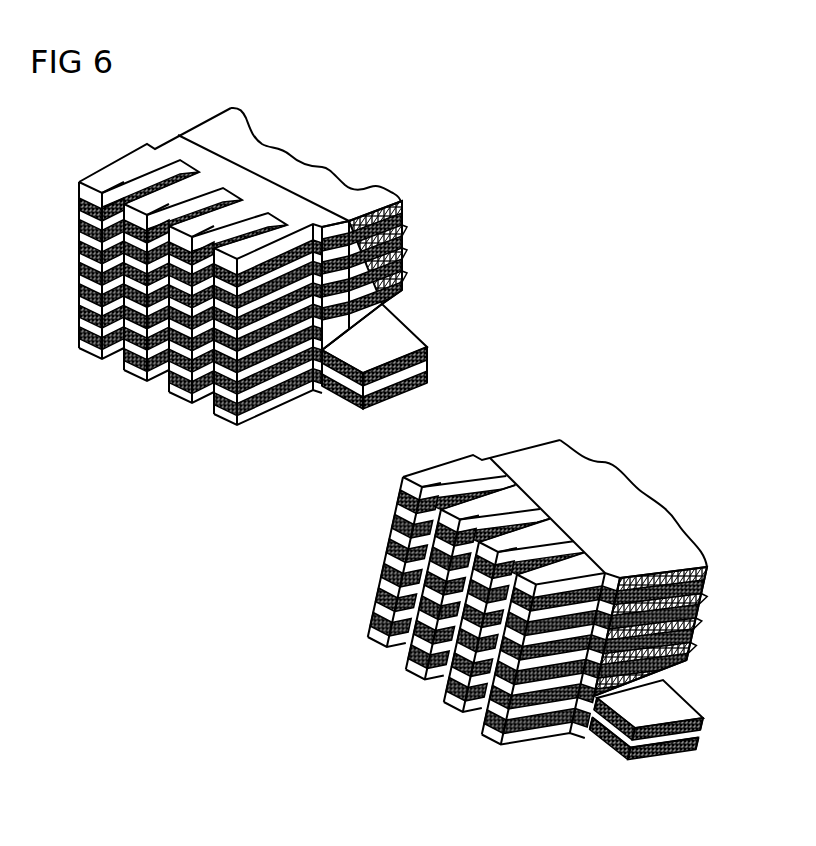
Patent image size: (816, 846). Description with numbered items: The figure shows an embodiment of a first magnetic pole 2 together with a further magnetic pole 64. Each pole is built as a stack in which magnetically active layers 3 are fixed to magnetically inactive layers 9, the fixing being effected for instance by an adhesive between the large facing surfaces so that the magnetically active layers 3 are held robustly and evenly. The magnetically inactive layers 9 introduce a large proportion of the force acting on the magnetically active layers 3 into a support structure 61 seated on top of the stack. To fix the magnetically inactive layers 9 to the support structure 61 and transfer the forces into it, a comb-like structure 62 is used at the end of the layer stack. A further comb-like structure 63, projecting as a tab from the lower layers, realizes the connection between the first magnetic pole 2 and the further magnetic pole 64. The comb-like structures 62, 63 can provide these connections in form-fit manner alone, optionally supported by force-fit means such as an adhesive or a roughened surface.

The first magnetic pole 2 is at (263, 241).
The magnetically active layers 3 is at (78, 205).
The magnetically inactive layers 9 is at (78, 239).
The support structure 61 is at (207, 128).
The comb-like structure 62 is at (428, 226).
The comb-like structure 63 is at (428, 324).
The further magnetic pole 64 is at (645, 467).